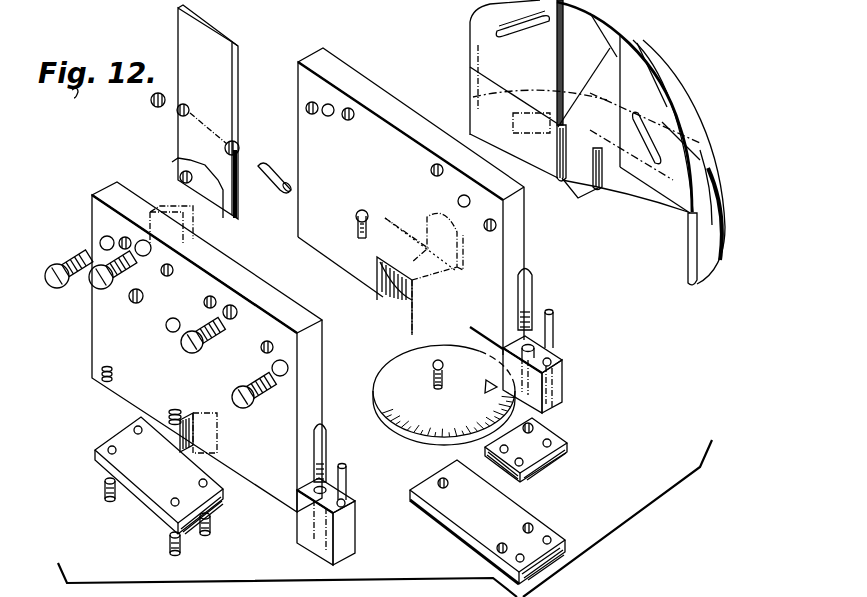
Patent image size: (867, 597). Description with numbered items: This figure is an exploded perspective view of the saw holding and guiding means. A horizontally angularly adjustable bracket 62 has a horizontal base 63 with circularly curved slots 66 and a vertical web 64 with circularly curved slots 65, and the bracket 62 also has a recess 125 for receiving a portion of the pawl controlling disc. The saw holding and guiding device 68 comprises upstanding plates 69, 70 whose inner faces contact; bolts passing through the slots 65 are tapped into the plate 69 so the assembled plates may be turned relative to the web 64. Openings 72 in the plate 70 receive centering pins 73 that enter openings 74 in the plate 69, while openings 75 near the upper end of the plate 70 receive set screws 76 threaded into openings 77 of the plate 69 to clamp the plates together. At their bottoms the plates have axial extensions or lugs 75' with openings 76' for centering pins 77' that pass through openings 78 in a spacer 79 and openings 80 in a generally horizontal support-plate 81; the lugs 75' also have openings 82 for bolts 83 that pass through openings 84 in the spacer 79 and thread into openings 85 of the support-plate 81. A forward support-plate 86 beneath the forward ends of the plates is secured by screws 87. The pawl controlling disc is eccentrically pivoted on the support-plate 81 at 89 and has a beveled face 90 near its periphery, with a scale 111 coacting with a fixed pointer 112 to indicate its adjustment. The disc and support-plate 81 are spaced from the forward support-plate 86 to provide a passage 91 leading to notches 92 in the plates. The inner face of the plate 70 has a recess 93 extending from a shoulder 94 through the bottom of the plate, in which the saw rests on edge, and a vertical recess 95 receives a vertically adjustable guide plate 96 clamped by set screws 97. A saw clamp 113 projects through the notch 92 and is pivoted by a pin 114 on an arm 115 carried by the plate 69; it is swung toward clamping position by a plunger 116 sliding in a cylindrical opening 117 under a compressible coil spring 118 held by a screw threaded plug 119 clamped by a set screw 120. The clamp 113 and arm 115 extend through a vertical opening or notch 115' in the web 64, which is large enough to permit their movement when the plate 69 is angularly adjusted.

The horizontally angularly adjustable bracket 62 is at (670, 86).
The horizontal base 63 is at (718, 201).
The vertical web 64 is at (675, 117).
The circularly curved slots 65 is at (497, 30).
The circularly curved slots 66 is at (512, 115).
The saw holding and guiding device 68 is at (388, 394).
The upstanding plate 69 is at (408, 124).
The upstanding plate 70 is at (266, 304).
The openings 72 is at (120, 240).
The centering pins 73 is at (172, 205).
The openings 74 is at (322, 112).
The openings 75 is at (203, 300).
The axial extensions or lugs 75' is at (453, 450).
The set screws 76 is at (160, 324).
The openings 76' is at (480, 420).
The openings 77 is at (417, 165).
The centering pins 77' is at (467, 402).
The openings 78 is at (548, 448).
The spacer 79 is at (550, 426).
The openings 80 is at (546, 539).
The support-plate 81 is at (504, 508).
The openings 82 is at (560, 348).
The bolts 83 is at (533, 302).
The openings 84 is at (526, 432).
The openings 85 is at (524, 532).
The forward support-plate 86 is at (160, 492).
The screws 87 is at (112, 500).
The eccentric pivot 89 is at (433, 368).
The beveled face 90 is at (437, 436).
The passage 91 is at (167, 327).
The notches 92 is at (410, 300).
The recess 93 is at (324, 374).
The shoulder 94 is at (326, 356).
The vertical recess 95 is at (227, 255).
The guide plate 96 is at (220, 90).
The set screws 97 is at (174, 163).
The scale 111 is at (416, 430).
The fixed pointer 112 is at (490, 388).
The saw clamp 113 is at (432, 252).
The pin 114 is at (455, 226).
The arm 115 is at (420, 218).
The vertical opening or notch 115' is at (571, 109).
The plunger 116 is at (281, 176).
The cylindrical opening 117 is at (370, 214).
The compressible coil spring 118 is at (180, 116).
The screw threaded plug 119 is at (158, 107).
The set screw 120 is at (283, 267).
The recess 125 is at (679, 212).